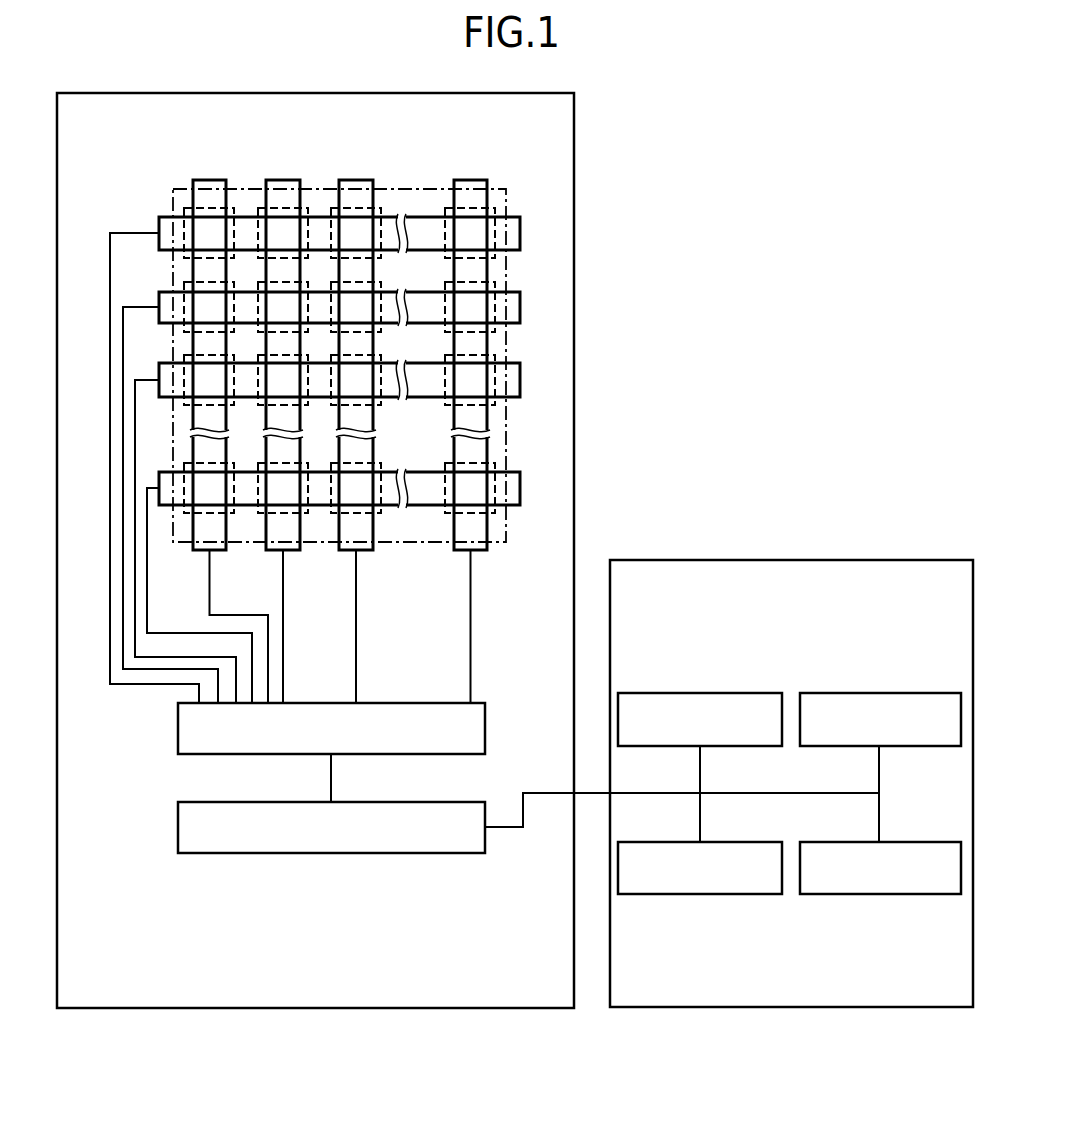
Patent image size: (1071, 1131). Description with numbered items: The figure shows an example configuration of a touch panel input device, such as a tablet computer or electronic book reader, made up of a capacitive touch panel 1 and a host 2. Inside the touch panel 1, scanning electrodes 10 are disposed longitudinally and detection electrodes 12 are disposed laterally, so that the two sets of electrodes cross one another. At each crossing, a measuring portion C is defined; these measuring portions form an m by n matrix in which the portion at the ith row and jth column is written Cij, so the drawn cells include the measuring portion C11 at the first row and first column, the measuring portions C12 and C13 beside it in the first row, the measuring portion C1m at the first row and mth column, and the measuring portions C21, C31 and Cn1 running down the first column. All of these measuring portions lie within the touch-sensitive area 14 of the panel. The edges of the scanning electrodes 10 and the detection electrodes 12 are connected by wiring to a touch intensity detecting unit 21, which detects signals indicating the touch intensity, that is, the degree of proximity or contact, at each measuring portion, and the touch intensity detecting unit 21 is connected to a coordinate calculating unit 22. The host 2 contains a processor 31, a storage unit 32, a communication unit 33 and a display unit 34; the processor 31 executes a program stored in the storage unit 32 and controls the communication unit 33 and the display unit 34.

The touch panel 1 is at (574, 131).
The host 2 is at (920, 560).
The scanning electrodes 10 is at (487, 184).
The detection electrodes 12 is at (520, 233).
The touch-sensitive area 14 is at (510, 421).
The touch intensity detecting unit 21 is at (177, 724).
The coordinate calculating unit 22 is at (177, 823).
The processor 31 is at (736, 693).
The storage unit 32 is at (738, 894).
The communication unit 33 is at (908, 693).
The display unit 34 is at (910, 894).
The measuring portion C11 is at (187, 202).
The measuring portion C12 is at (285, 202).
The measuring portion C13 is at (363, 202).
The measuring portion C1m is at (448, 202).
The measuring portion C21 is at (183, 312).
The measuring portion C31 is at (172, 383).
The measuring portion Cn1 is at (200, 515).